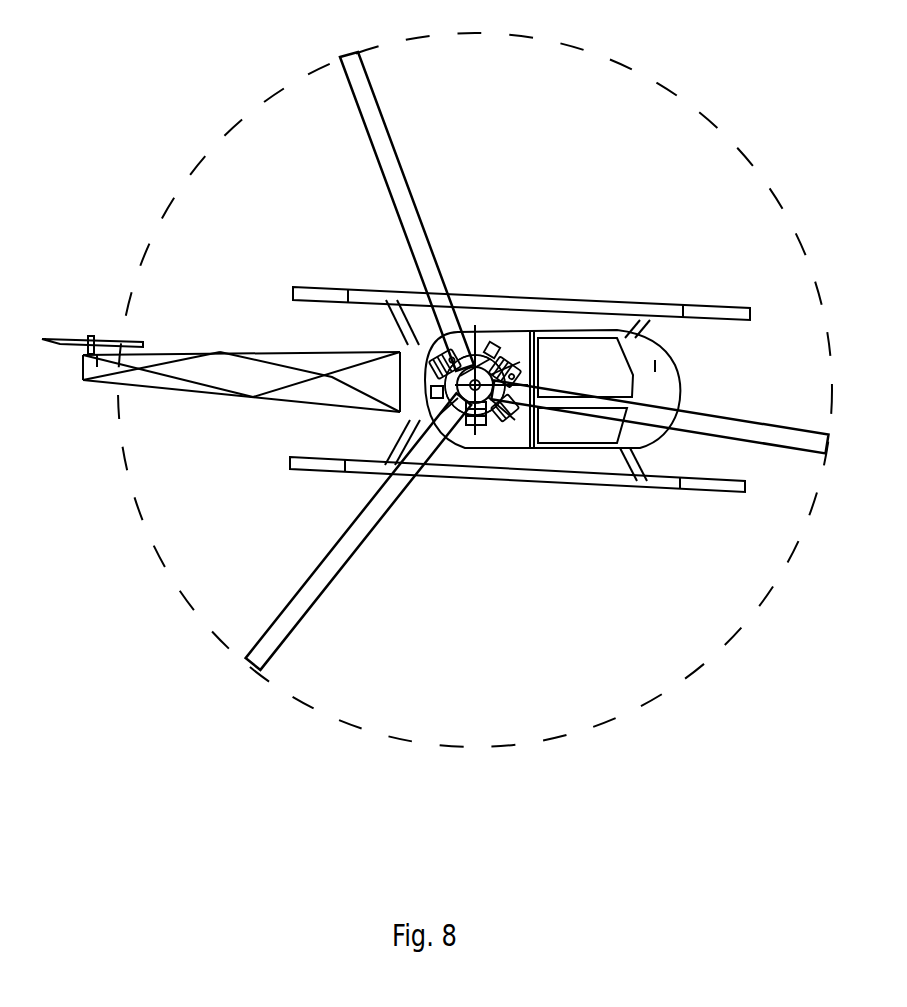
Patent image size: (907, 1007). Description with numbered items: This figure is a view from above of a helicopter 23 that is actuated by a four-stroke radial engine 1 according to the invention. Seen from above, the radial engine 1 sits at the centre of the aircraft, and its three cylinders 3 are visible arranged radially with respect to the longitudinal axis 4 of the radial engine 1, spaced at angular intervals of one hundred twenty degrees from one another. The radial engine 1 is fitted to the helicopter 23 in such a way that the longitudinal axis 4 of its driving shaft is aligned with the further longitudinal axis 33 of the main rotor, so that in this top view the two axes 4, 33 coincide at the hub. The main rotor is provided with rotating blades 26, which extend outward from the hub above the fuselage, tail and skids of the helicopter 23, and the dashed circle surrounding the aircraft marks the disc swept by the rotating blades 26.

The radial engine 1 is at (455, 497).
The cylinders 3 is at (518, 350).
The longitudinal axis 4 is at (510, 405).
The further longitudinal axis 33 is at (510, 405).
The helicopter 23 is at (778, 693).
The rotating blades 26 is at (407, 187).